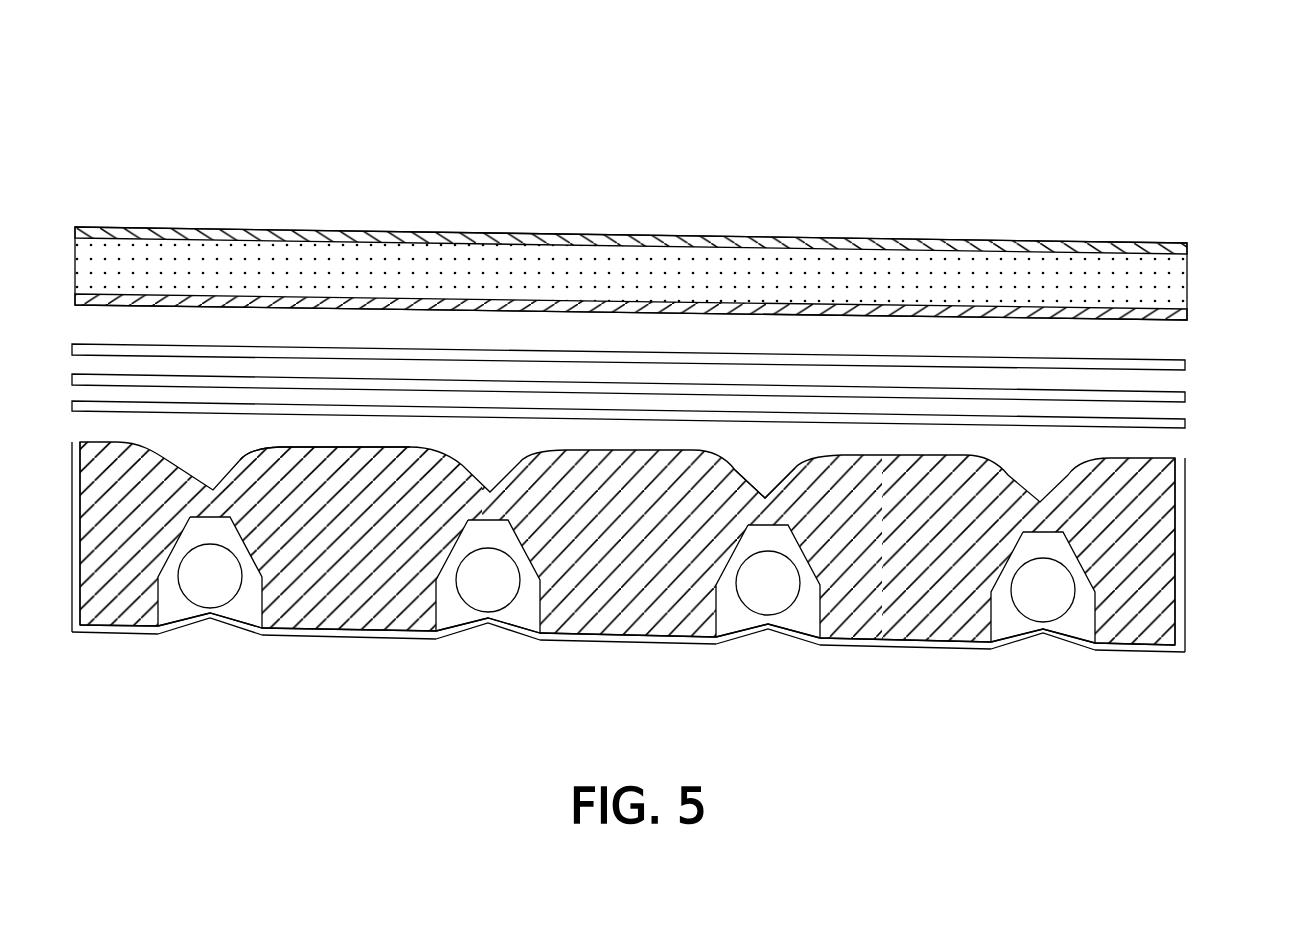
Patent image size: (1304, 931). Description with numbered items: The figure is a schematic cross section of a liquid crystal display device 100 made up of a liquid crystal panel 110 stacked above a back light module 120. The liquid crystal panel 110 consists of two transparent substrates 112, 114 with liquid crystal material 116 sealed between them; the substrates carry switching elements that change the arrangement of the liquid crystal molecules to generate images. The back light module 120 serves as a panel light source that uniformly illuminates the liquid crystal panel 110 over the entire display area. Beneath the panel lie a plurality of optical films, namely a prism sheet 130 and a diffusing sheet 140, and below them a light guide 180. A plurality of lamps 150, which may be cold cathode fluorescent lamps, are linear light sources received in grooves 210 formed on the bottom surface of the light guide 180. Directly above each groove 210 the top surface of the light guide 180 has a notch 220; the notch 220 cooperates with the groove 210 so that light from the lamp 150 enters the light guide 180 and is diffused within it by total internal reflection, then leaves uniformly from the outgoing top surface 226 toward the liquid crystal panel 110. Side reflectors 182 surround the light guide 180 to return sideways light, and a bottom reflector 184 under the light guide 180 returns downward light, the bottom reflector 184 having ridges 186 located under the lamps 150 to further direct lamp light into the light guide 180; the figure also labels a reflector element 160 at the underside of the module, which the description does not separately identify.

The liquid crystal display device 100 is at (98, 118).
The liquid crystal panel 110 is at (681, 238).
The transparent substrate 112 is at (382, 237).
The transparent substrate 114 is at (343, 303).
The liquid crystal material 116 is at (308, 272).
The back light module 120 is at (1242, 653).
The prism sheet 130 is at (1185, 365).
The diffusing sheet 140 is at (1185, 423).
The lamp 150 is at (1057, 598).
The reflector 160 is at (663, 598).
The light guide 180 is at (910, 607).
The side reflector 182 is at (72, 590).
The bottom reflector 184 is at (110, 633).
The ridge 186 is at (207, 623).
The groove 210 is at (800, 622).
The notch 220 is at (765, 478).
The top surface (outgoing surface) 226 is at (347, 447).